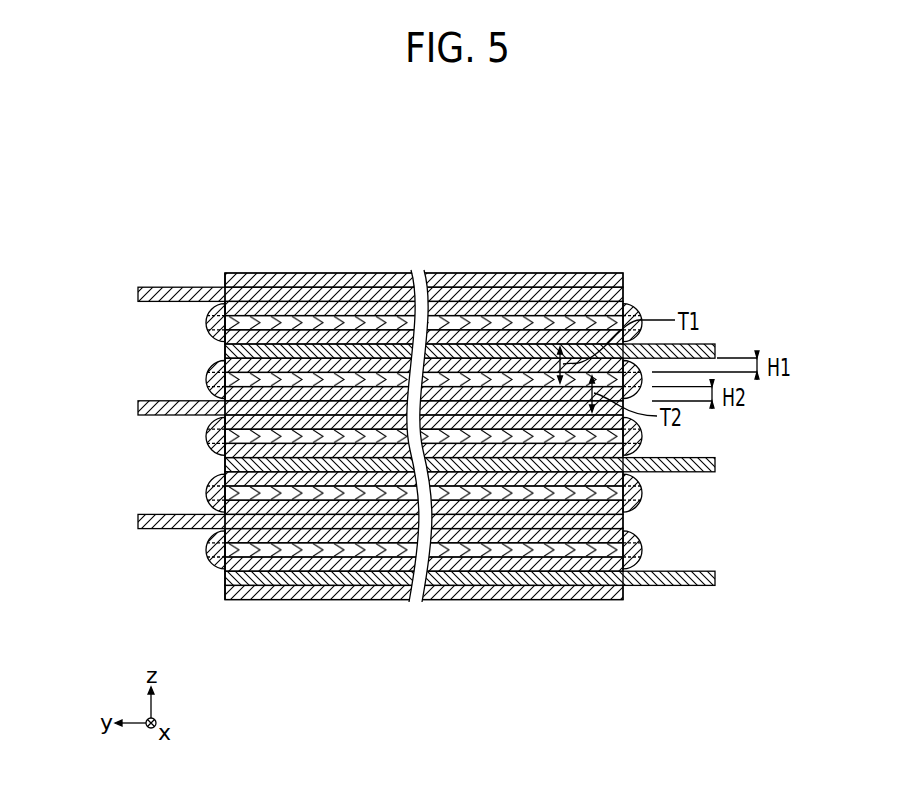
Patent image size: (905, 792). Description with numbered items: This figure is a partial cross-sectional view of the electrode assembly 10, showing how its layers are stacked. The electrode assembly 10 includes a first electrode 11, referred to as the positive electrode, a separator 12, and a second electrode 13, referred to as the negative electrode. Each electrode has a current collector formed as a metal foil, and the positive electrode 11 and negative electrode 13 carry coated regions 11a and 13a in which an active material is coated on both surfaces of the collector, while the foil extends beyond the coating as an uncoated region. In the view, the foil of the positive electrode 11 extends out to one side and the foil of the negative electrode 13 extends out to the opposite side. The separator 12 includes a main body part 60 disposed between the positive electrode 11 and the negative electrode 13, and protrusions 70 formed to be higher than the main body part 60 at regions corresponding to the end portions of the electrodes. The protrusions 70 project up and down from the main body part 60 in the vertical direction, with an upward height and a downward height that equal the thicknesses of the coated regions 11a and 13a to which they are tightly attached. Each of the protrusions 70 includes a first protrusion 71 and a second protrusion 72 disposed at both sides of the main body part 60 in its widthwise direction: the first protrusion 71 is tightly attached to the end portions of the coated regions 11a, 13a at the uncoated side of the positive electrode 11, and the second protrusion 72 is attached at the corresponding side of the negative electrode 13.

The electrode assembly 10 is at (444, 186).
The first electrode 11 is at (731, 578).
The coated region 11a is at (577, 568).
The separator 12 is at (194, 549).
The second electrode 13 is at (130, 521).
The coated region 13a is at (535, 507).
The main body part 60 is at (459, 550).
The protrusions 70 is at (486, 424).
The first protrusion 71 is at (628, 562).
The second protrusion 72 is at (213, 564).